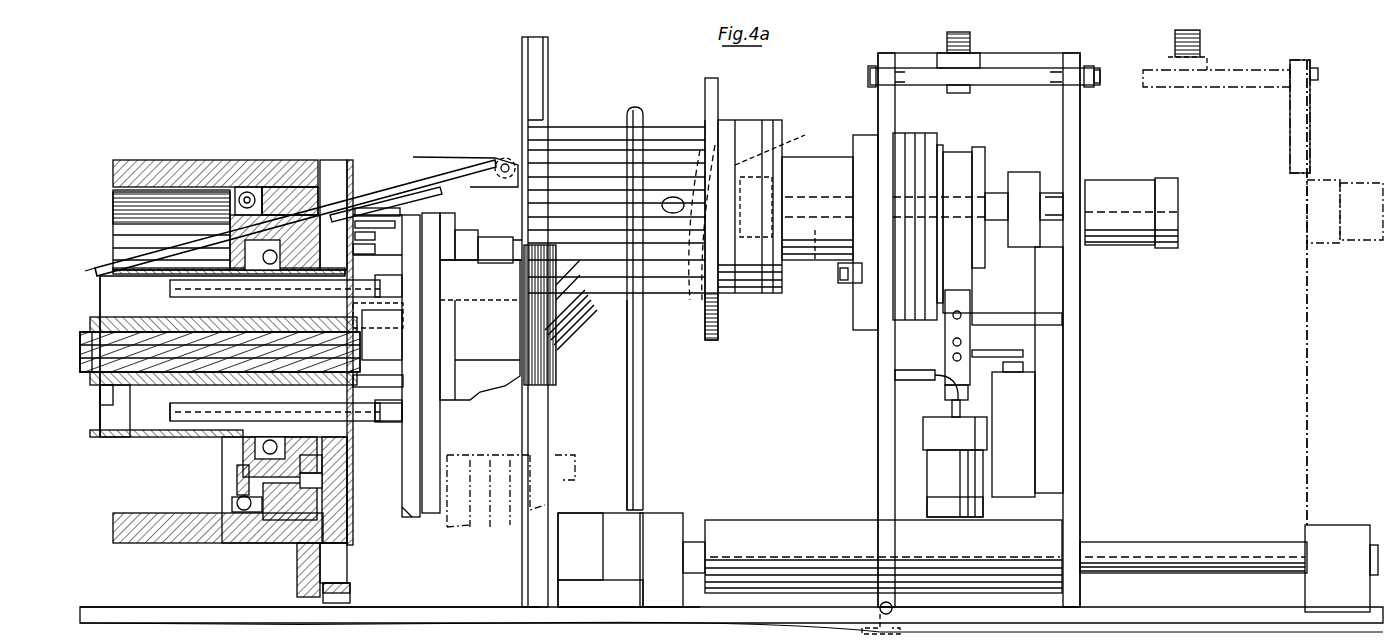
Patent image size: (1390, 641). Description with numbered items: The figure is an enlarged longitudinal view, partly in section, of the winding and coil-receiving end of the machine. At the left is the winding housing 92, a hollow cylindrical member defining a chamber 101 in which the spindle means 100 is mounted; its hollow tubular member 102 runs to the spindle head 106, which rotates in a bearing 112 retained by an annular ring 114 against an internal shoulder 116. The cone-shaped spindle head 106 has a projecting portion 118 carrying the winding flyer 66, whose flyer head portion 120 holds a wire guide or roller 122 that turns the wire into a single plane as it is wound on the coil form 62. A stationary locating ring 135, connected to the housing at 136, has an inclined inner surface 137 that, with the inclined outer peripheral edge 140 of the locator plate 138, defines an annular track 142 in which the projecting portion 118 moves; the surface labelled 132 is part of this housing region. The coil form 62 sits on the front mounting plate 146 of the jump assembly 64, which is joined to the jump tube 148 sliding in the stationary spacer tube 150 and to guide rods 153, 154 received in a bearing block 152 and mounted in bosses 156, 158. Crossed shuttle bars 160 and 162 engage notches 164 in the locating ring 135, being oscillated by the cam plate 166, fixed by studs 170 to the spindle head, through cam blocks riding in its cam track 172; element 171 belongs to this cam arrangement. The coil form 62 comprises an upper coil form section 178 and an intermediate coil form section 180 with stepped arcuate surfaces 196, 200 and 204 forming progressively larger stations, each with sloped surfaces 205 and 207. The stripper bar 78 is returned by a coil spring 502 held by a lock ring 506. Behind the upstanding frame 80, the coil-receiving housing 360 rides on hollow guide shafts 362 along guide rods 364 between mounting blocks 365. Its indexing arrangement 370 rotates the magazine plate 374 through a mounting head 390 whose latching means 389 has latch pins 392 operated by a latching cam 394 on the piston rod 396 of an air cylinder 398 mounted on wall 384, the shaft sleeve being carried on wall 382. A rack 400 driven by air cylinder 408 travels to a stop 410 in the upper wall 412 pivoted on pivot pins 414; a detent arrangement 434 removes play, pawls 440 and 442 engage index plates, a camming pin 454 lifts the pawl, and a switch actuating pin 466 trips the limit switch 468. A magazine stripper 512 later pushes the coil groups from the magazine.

The coil form 62 is at (498, 425).
The jump assembly 64 is at (380, 270).
The winding flyer 66 is at (447, 160).
The stripper bar 78 is at (86, 385).
The upstanding frame 80 is at (548, 68).
The winding housing 92 is at (178, 160).
The spindle means 100 is at (147, 440).
The chamber 101 is at (113, 205).
The hollow tubular member 102 is at (185, 450).
The spindle head 106 is at (232, 490).
The bearing 112 is at (252, 192).
The annular ring 114 is at (290, 187).
The internal shoulder 116 is at (244, 190).
The projecting portion 118 is at (380, 200).
The flyer head portion 120 is at (483, 158).
The wire guide or roller 122 is at (505, 158).
The housing inner wall 132 is at (128, 268).
The stationary locating ring 135 is at (350, 160).
The connection of locating ring to housing 136 is at (335, 548).
The inclined inner surface 137 is at (345, 185).
The locator plate 138 is at (360, 249).
The inclined outer peripheral edge 140 is at (372, 212).
The annular track 142 is at (347, 500).
The front mounting plate 146 is at (402, 465).
The jump tube 148 is at (115, 395).
The stationary spacer tube 150 is at (165, 387).
The bearing block 152 is at (246, 405).
The guide rod 153 is at (168, 413).
The guide rod 154 is at (200, 297).
The boss 156 is at (385, 421).
The boss 158 is at (380, 320).
The shuttle bar 160 is at (362, 386).
The shuttle bar 162 is at (347, 480).
The notches 164 is at (330, 583).
The cam plate 166 is at (248, 252).
The studs 170 is at (362, 224).
The clamp screw 171 is at (360, 238).
The cam track 172 is at (322, 462).
The upper coil form section 178 is at (495, 240).
The intermediate coil form section 180 is at (582, 310).
The arcuate surface 196 is at (632, 624).
The arcuate surface 200 is at (731, 624).
The arcuate surface 204 is at (313, 624).
The sloped arcuate surface 205 is at (450, 220).
The inclined arcuate surface 207 is at (478, 393).
The upstanding housing 360 is at (1082, 296).
The hollow guide shafts 362 is at (1045, 525).
The guide rods 364 is at (1210, 542).
The mounting blocks 365 is at (672, 513).
The indexing arrangement 370 is at (930, 133).
The plate 374 is at (718, 120).
The housing wall 382 is at (878, 463).
The housing wall 384 is at (1080, 455).
The latching means 389 is at (735, 165).
The magazine mounting head 390 is at (765, 293).
The latch pins 392 is at (690, 300).
The latching cam 394 is at (772, 185).
The piston rod 396 is at (815, 260).
The air cylinder 398 is at (1135, 180).
The rack 400 is at (972, 280).
The air cylinder 408 is at (983, 510).
The stop 410 is at (970, 42).
The upper wall 412 is at (1020, 68).
The pivot pins 414 is at (1100, 76).
The detent arrangement 434 is at (858, 283).
The pawl 440 is at (912, 390).
The pawl 442 is at (923, 425).
The camming pin 454 is at (1033, 313).
The switch actuating pin 466 is at (998, 350).
The limit switch 468 is at (1028, 423).
The coil spring 502 is at (125, 317).
The lock ring 506 is at (630, 107).
The magazine stripper 512 is at (718, 330).